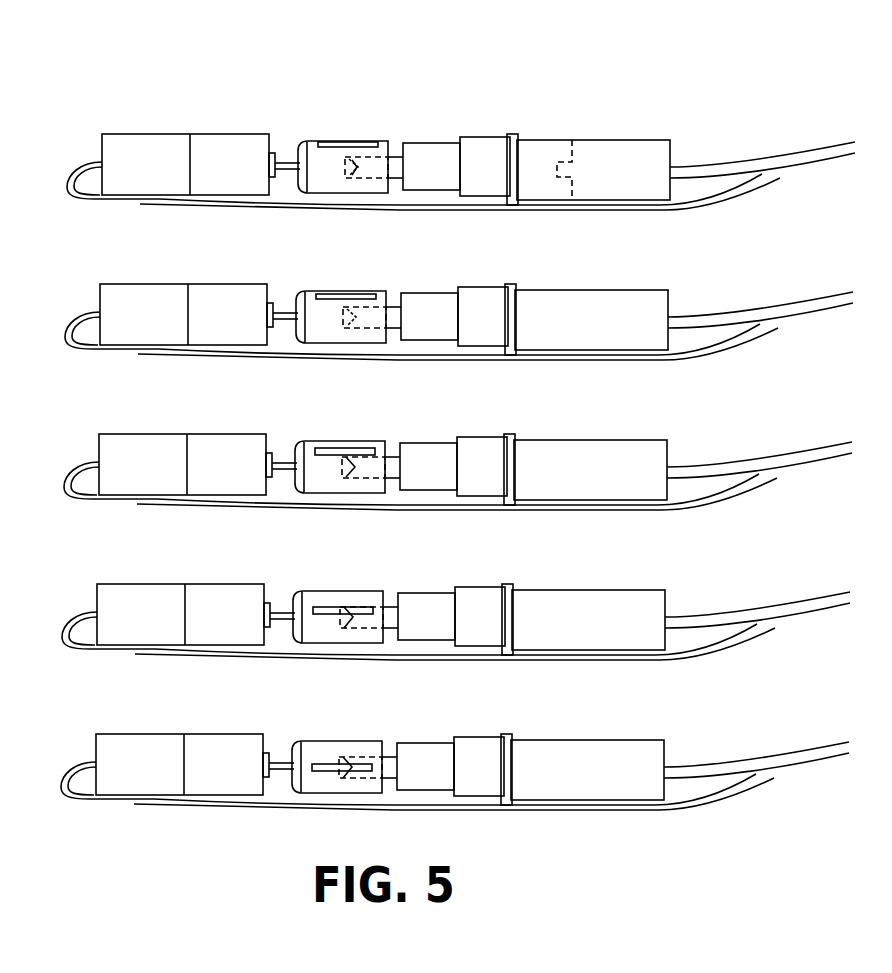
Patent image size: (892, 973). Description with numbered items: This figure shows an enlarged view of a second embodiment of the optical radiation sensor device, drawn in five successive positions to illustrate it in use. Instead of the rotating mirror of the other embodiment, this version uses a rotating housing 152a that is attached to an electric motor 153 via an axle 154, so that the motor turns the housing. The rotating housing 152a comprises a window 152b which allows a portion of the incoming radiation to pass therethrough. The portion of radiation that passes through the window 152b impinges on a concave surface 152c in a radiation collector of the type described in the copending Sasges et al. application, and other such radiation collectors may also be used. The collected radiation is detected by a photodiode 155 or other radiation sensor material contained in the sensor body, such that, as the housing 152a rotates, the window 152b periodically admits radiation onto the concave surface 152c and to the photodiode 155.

The electric motor 153 is at (214, 152).
The axle 154 is at (288, 165).
The rotating housing 152a is at (388, 145).
The window 152b is at (347, 142).
The concave surface 152c is at (358, 180).
The photodiode 155 is at (560, 140).